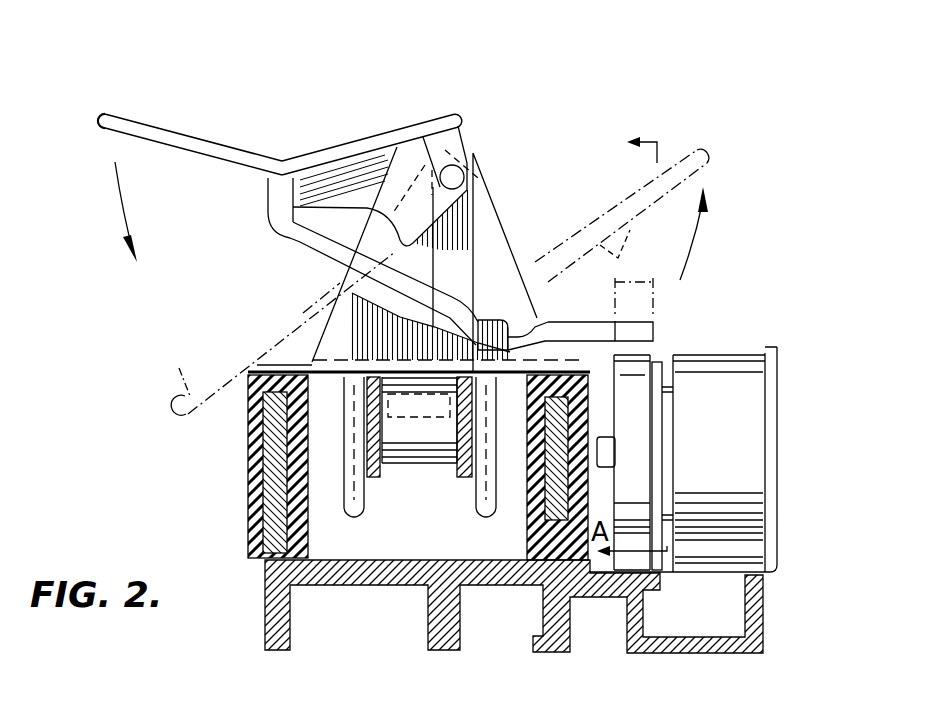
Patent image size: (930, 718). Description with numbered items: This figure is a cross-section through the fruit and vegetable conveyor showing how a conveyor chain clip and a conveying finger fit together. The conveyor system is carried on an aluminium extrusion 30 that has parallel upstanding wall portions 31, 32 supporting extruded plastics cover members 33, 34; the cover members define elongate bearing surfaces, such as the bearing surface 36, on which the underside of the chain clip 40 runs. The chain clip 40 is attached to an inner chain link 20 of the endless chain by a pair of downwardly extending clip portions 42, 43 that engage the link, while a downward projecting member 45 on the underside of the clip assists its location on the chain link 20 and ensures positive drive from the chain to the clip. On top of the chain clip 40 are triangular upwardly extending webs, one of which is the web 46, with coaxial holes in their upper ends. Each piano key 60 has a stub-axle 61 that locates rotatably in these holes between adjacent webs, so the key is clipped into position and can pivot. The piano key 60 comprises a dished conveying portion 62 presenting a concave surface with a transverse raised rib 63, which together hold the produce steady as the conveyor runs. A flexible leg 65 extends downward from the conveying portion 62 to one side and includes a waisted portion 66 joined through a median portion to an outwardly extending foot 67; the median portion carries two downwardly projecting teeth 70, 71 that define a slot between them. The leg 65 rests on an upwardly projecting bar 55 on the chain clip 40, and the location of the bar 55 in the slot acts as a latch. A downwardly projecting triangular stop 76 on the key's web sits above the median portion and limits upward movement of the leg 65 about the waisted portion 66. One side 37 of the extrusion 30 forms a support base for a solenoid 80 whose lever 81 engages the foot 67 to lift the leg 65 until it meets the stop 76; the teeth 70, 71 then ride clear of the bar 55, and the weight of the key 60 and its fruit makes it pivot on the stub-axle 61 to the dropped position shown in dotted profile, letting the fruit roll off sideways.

The chain link 20 is at (410, 433).
The aluminium extrusion 30 is at (268, 630).
The upstanding wall portion 31 is at (273, 420).
The upstanding wall portion 32 is at (553, 430).
The cover member 33 is at (258, 472).
The cover member 34 is at (527, 533).
The bearing surface 36 is at (553, 400).
The side of the aluminium extrusion 37 is at (768, 588).
The chain clip 40 is at (367, 493).
The clip portion 42 is at (363, 492).
The clip portion 43 is at (483, 493).
The downward projecting member 45 is at (433, 412).
The upwardly extending web 46 is at (303, 313).
The upwardly projecting bar 55 is at (455, 313).
The piano key 60 is at (403, 210).
The stub-axle 61 is at (455, 176).
The dished conveying portion 62 is at (388, 128).
The raised rib 63 is at (187, 130).
The flexible leg 65 is at (280, 197).
The waisted portion 66 is at (287, 238).
The foot 67 is at (638, 330).
The tooth 70 is at (463, 300).
The tooth 71 is at (593, 319).
The triangular stop 76 is at (413, 227).
The solenoid 80 is at (752, 412).
The lever 81 is at (620, 493).